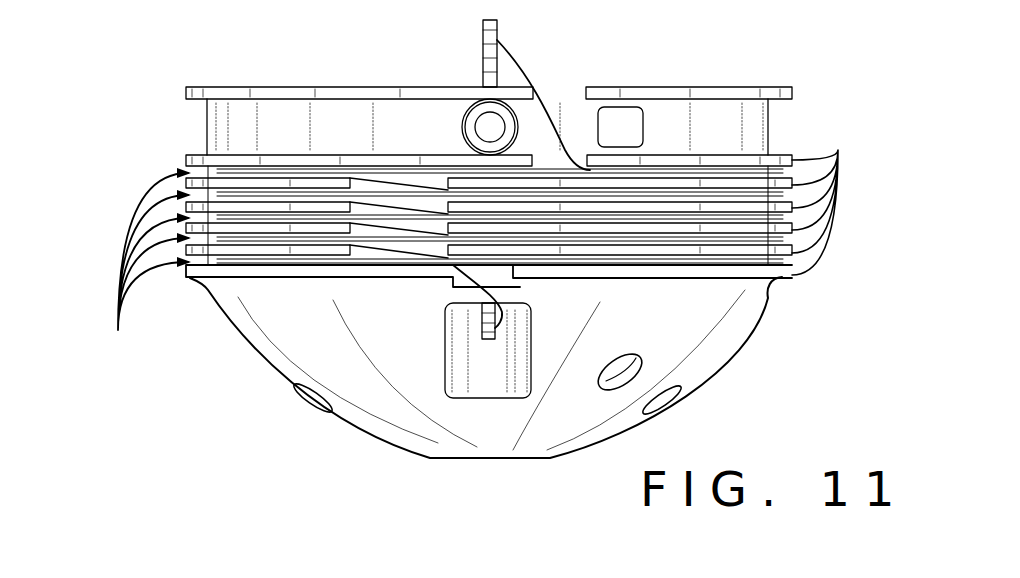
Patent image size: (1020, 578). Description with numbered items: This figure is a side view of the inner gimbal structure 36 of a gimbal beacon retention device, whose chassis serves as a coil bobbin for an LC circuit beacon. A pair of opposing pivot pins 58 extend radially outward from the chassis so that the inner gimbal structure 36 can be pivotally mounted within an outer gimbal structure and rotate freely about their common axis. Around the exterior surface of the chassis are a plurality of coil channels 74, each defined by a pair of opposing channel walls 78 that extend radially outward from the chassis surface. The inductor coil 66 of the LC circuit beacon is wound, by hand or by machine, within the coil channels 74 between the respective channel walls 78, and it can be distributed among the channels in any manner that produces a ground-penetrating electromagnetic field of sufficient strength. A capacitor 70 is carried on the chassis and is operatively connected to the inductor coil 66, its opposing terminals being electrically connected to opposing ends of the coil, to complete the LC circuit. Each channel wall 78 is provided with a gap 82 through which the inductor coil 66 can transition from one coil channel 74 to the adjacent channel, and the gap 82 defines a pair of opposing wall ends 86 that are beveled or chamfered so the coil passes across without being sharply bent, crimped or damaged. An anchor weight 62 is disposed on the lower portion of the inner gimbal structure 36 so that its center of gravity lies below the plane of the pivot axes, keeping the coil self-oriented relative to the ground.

The inner gimbal structure 36 is at (163, 115).
The pivot pin 58 is at (468, 120).
The anchor weight 62 is at (717, 328).
The inductor coil 66 is at (517, 53).
The capacitor 70 is at (482, 64).
The coil channel 74 is at (147, 265).
The channel wall 78 is at (826, 198).
The gap 82 is at (437, 253).
The wall end 86 is at (340, 185).